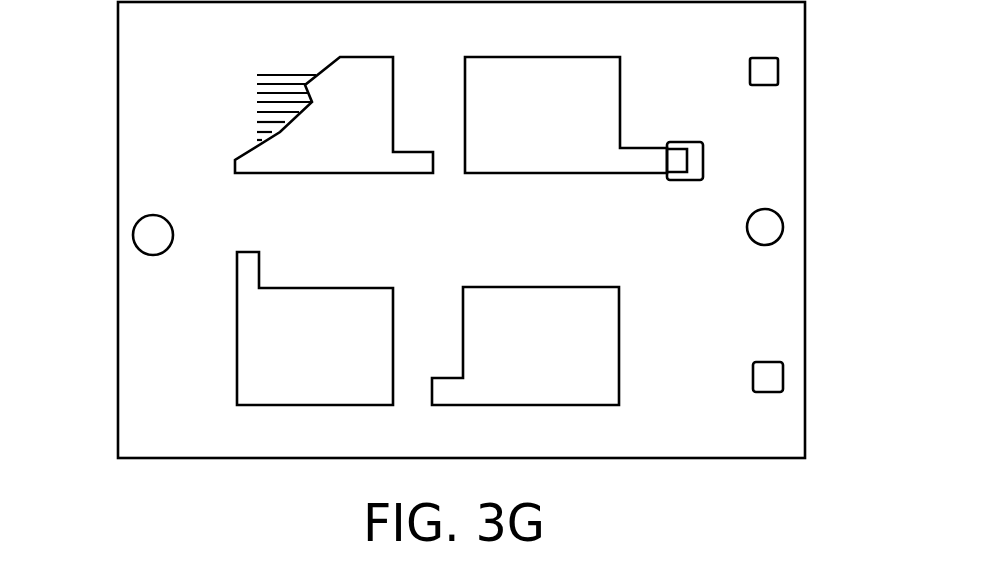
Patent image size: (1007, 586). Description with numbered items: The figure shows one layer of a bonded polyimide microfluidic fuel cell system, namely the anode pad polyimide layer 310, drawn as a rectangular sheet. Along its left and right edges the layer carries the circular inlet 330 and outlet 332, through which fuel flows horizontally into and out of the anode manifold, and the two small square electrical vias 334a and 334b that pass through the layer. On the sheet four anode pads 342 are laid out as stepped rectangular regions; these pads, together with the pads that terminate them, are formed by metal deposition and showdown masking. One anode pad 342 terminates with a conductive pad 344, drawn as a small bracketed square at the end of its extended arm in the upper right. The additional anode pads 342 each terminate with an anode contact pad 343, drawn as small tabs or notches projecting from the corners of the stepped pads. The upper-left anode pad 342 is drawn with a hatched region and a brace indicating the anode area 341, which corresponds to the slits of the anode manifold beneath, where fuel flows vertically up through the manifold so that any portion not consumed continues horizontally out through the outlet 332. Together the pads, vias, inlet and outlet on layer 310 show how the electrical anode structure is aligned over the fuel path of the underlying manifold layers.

The anode pad polyimide layer 310 is at (725, 442).
The inlet 330 is at (773, 232).
The outlet 332 is at (155, 235).
The electrical via 334a is at (768, 75).
The electrical via 334b is at (770, 378).
The anode area 341 is at (248, 68).
The anode pad 342 is at (365, 155).
The anode contact pad 343 is at (415, 163).
The conductive pad 344 is at (693, 137).